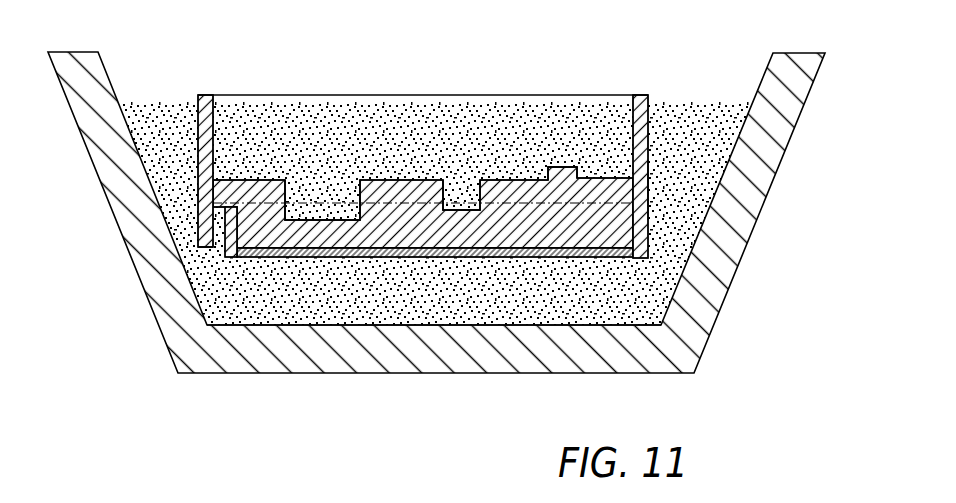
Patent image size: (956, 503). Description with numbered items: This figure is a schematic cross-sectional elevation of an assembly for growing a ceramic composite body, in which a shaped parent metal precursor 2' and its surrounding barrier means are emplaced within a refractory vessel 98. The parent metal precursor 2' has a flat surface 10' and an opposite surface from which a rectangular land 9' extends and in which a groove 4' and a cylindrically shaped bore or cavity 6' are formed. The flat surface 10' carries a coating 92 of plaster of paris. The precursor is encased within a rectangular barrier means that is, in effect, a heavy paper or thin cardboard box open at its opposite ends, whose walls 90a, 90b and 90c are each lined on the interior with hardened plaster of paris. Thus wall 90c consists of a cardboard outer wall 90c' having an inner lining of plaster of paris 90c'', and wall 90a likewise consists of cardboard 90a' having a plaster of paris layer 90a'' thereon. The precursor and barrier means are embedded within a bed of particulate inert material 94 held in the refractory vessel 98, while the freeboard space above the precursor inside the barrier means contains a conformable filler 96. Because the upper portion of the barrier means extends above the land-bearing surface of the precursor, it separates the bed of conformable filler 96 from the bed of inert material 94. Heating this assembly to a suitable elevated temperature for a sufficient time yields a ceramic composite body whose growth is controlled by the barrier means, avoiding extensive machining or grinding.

The parent metal precursor 2' is at (423, 293).
The groove 4' is at (299, 126).
The cylindrically shaped bore or cavity 6' is at (473, 123).
The rectangular land 9' is at (565, 108).
The flat surface 10' is at (435, 337).
The wall 90a is at (673, 150).
The cardboard 90a' is at (749, 178).
The plaster of paris layer 90a'' is at (749, 214).
The wall 90b is at (400, 92).
The wall 90c is at (178, 140).
The cardboard outer wall 90c' is at (132, 203).
The plaster of paris inner lining 90c'' is at (142, 239).
The coating of plaster of paris 92 is at (323, 255).
The bed of particulate inert material 94 is at (675, 248).
The conformable filler 96 is at (321, 128).
The refractory vessel 98 is at (158, 328).